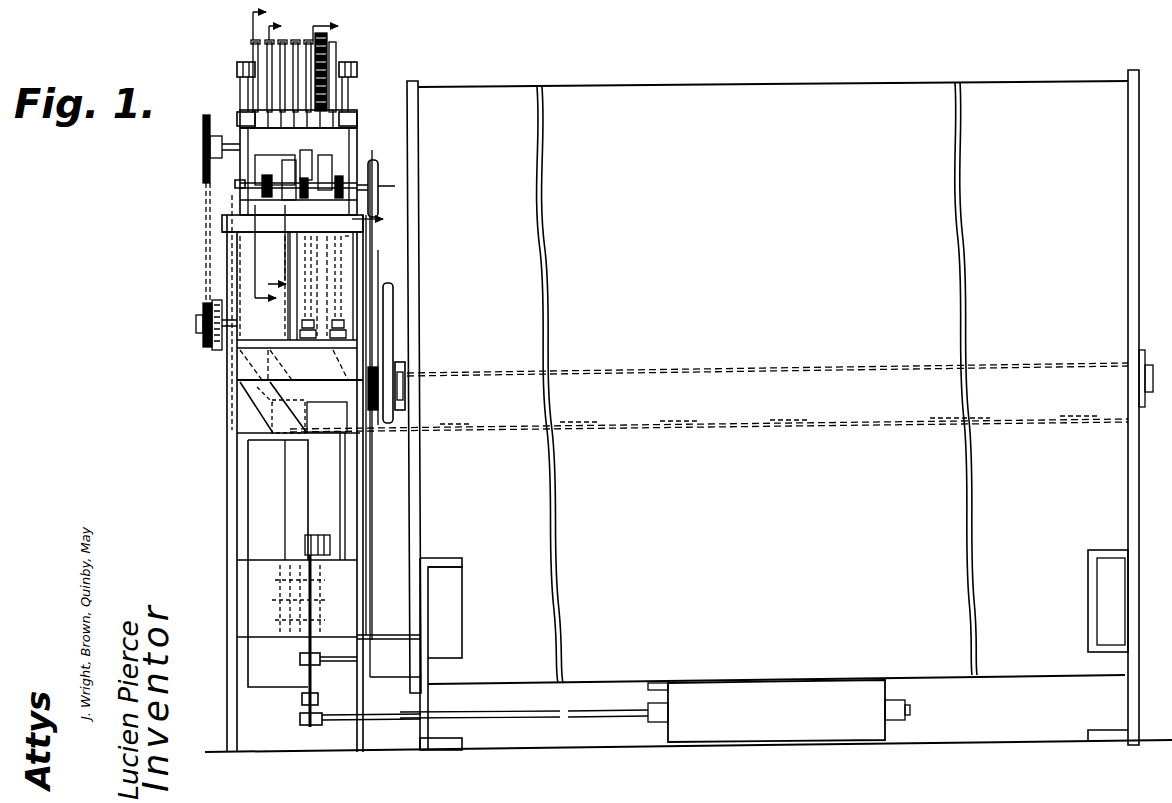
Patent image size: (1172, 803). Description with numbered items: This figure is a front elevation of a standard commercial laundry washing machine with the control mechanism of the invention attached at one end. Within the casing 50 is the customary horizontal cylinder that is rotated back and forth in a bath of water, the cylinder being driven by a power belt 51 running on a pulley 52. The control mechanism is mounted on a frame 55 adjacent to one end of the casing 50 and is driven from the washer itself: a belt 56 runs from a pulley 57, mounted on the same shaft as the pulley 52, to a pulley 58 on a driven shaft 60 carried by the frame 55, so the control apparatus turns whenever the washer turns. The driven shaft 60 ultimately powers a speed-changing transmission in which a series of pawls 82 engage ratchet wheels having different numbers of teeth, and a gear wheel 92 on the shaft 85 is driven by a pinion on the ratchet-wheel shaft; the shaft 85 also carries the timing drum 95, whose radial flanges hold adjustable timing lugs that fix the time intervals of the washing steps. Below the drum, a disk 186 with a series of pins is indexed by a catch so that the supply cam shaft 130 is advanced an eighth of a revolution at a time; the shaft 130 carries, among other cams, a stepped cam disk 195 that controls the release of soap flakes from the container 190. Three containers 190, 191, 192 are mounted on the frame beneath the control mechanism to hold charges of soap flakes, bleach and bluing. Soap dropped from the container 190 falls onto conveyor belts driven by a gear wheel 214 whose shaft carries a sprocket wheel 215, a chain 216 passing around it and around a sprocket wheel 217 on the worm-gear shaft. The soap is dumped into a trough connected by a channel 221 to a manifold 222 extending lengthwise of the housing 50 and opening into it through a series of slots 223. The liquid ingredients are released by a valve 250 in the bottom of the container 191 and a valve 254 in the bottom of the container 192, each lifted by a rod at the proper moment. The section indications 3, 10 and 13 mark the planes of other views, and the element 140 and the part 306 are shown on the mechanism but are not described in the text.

The section line 3- 3 is at (356, 123).
The section line 10- 10 is at (265, 154).
The section line 13- 13 is at (288, 150).
The casing 50 is at (515, 87).
The power belt 51 is at (387, 318).
The pulley 52 is at (397, 360).
The frame 55 is at (227, 505).
The belt 56 is at (375, 262).
The pulley 57 is at (372, 422).
The pulley 58 is at (383, 198).
The driven shaft 60 is at (363, 183).
The pawls 82 is at (357, 68).
The shaft 85 is at (238, 68).
The gear wheel 92 is at (328, 44).
The drum 95 is at (255, 44).
The shaft 130 is at (242, 214).
The cross bar 140 is at (238, 118).
The disk 186 is at (236, 183).
The container 190 is at (243, 283).
The container 191 is at (337, 284).
The container 192 is at (347, 252).
The cam disk 195 is at (232, 230).
The gear wheel 214 is at (216, 347).
The sprocket wheel 215 is at (203, 338).
The chain 216 is at (209, 250).
The sprocket wheel 217 is at (203, 141).
The channel 221 is at (260, 396).
The manifold 222 is at (810, 368).
The slots 223 is at (798, 431).
The valve 250 is at (300, 365).
The valve 254 is at (298, 408).
The gear mechanism 306 is at (262, 174).